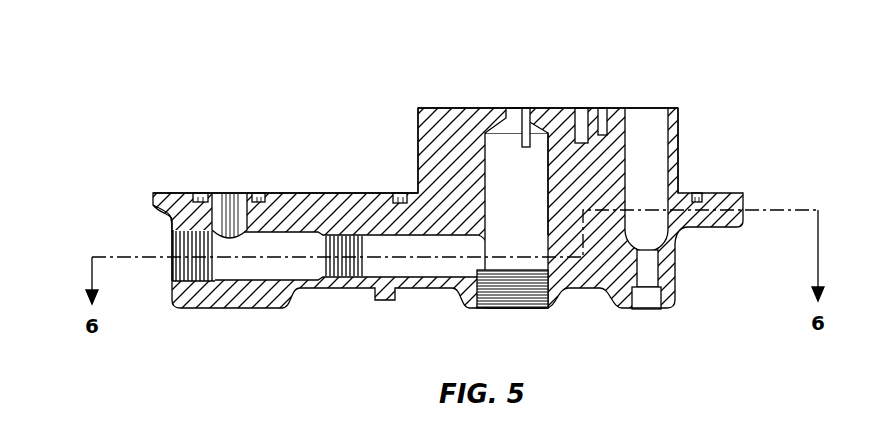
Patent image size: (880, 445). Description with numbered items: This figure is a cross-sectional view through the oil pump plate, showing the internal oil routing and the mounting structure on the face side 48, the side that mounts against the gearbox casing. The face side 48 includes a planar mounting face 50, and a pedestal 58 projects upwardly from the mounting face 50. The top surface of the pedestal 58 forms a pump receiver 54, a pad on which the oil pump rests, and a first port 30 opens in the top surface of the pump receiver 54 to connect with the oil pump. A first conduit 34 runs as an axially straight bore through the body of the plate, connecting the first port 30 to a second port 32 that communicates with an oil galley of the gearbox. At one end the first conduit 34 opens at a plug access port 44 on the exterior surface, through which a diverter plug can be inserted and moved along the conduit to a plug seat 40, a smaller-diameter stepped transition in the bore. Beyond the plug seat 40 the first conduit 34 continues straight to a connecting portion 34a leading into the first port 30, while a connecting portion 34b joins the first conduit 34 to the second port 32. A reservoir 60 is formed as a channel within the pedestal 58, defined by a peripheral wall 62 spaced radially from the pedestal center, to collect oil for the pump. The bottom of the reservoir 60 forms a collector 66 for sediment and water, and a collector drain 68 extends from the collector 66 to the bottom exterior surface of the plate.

The first port 30 is at (515, 112).
The second port 32 is at (228, 200).
The first conduit 34 is at (383, 232).
The connecting portion 34a is at (550, 174).
The connecting portion 34b is at (222, 217).
The plug seat 40 is at (350, 278).
The plug access port 44 is at (180, 270).
The face side 48 is at (563, 108).
The mounting face 50 is at (322, 193).
The pump receiver 54 is at (476, 108).
The pedestal 58 is at (418, 138).
The reservoir 60 is at (657, 137).
The peripheral wall 62 is at (679, 108).
The collector 66 is at (657, 235).
The collector drain 68 is at (648, 278).